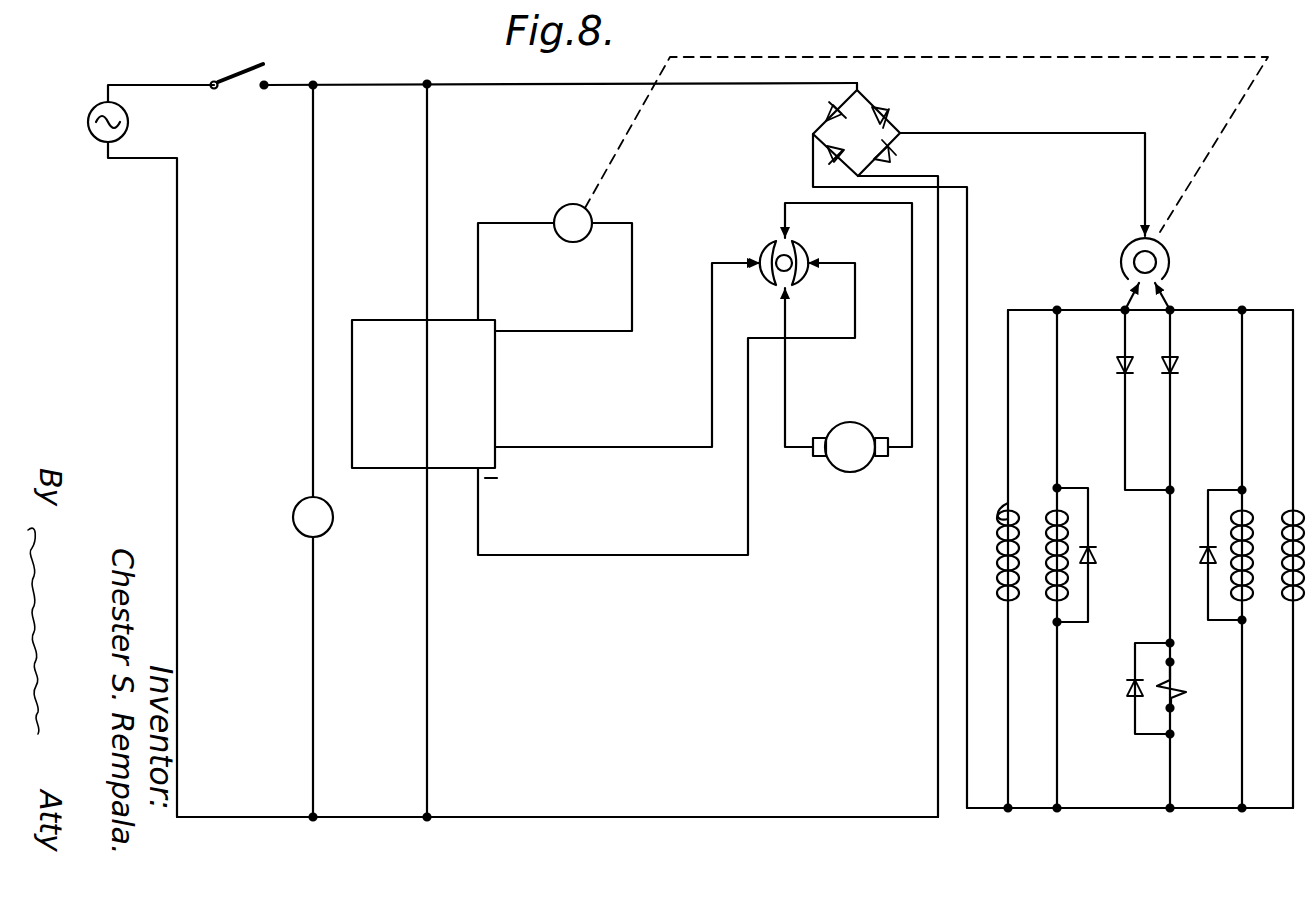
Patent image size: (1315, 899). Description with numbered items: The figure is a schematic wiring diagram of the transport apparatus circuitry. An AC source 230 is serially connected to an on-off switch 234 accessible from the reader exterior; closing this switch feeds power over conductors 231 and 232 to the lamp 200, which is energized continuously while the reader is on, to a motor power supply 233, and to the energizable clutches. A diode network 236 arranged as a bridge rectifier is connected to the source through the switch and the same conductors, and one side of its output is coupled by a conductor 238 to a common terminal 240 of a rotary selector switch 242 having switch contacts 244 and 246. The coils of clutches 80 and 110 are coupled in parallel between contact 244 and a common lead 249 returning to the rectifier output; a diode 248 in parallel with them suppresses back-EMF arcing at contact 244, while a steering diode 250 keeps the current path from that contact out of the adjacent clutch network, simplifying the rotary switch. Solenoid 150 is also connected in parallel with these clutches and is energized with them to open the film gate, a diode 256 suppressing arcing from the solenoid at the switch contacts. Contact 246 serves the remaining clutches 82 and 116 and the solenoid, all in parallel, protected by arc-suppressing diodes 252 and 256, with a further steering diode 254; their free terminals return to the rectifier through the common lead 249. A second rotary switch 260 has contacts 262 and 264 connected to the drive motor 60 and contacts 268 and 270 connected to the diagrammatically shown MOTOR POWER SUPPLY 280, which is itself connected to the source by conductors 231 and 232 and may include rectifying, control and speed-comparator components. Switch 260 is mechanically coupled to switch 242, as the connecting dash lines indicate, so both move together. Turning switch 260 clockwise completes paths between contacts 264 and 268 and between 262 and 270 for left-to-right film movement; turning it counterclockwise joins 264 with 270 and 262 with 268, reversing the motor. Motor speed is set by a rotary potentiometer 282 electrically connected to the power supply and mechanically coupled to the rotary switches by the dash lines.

The AC source 230 is at (88, 116).
The on-off switch 234 is at (240, 76).
The conductor 232 is at (427, 84).
The conductor 231 is at (222, 816).
The lamp 200 is at (296, 508).
The motor power supply 233 is at (400, 319).
The motor power supply 280 is at (496, 402).
The rotary potentiometer 282 is at (586, 210).
The second rotary switch 260 is at (760, 246).
The switch contact 270 is at (754, 261).
The switch contact 262 is at (784, 232).
The switch contact 268 is at (855, 284).
The switch contact 264 is at (786, 290).
The drive motor 60 is at (846, 422).
The diode network 236 is at (888, 118).
The conductor 238 is at (1034, 133).
The common terminal 240 is at (1140, 244).
The rotary selector switch 242 is at (1132, 264).
The switch contact 246 is at (1128, 304).
The switch contact 244 is at (1166, 306).
The steering diode 250 is at (1116, 372).
The steering diode 254 is at (1170, 370).
The clutch 116 is at (998, 522).
The clutch 82 is at (1046, 532).
The arc suppressing diode 252 is at (1090, 554).
The clutch 110 is at (1246, 512).
The diode 248 is at (1202, 570).
The clutch 80 is at (1284, 596).
The diode 256 is at (1128, 691).
The solenoid 150 is at (1172, 692).
The common lead 249 is at (996, 810).